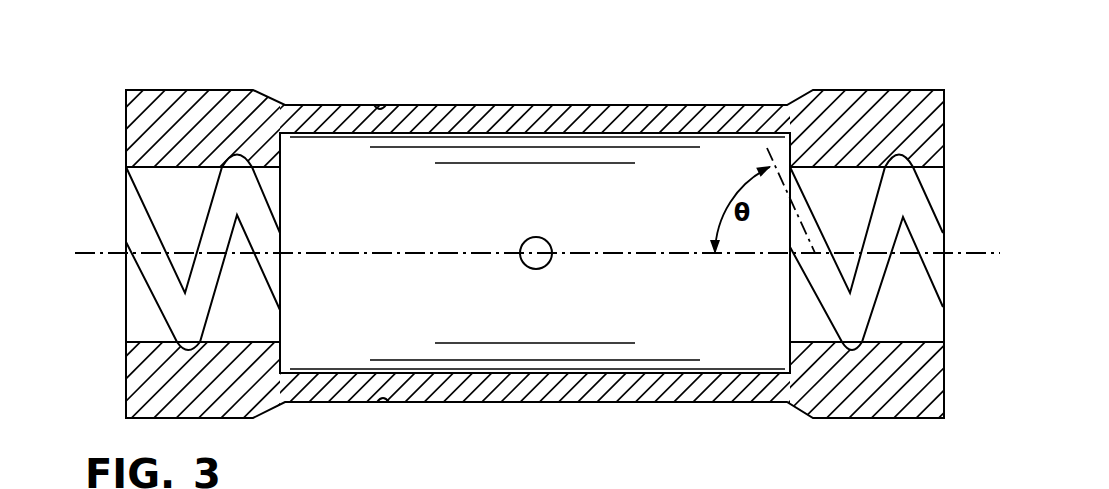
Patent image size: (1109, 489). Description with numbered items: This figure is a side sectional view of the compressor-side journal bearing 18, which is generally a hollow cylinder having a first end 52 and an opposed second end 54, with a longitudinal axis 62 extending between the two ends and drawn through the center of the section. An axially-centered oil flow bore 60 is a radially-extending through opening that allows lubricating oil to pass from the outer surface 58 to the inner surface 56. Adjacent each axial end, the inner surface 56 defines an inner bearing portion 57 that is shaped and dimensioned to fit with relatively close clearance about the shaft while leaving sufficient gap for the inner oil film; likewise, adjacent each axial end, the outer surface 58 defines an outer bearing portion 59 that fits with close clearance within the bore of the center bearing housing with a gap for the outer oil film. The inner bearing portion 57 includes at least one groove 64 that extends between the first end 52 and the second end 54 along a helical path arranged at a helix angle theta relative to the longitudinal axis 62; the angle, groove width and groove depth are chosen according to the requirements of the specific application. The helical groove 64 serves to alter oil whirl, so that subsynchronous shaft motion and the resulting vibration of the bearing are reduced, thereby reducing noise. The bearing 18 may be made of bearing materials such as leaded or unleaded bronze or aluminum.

The journal bearing 18 is at (564, 88).
The first end 52 is at (137, 97).
The second end 54 is at (915, 100).
The inner surface 56 is at (932, 168).
The inner bearing portion 57 is at (252, 342).
The outer surface 58 is at (720, 105).
The outer bearing portion 59 is at (203, 92).
The oil flow bore 60 is at (541, 238).
The longitudinal axis 62 is at (363, 253).
The groove 64 is at (253, 223).